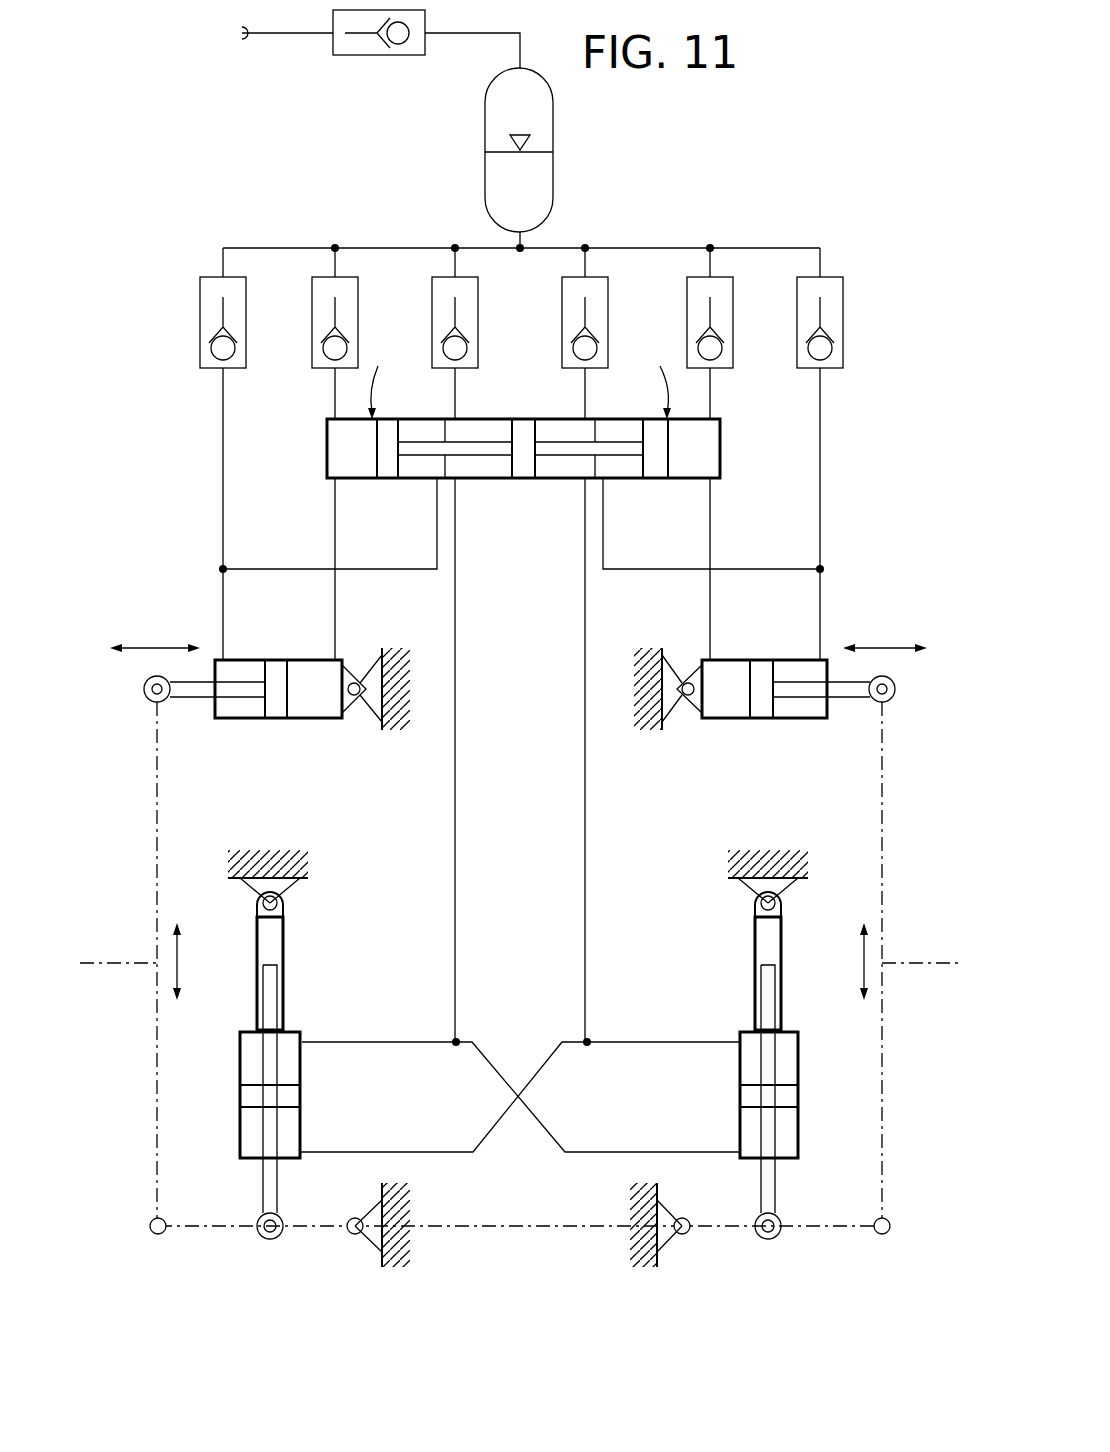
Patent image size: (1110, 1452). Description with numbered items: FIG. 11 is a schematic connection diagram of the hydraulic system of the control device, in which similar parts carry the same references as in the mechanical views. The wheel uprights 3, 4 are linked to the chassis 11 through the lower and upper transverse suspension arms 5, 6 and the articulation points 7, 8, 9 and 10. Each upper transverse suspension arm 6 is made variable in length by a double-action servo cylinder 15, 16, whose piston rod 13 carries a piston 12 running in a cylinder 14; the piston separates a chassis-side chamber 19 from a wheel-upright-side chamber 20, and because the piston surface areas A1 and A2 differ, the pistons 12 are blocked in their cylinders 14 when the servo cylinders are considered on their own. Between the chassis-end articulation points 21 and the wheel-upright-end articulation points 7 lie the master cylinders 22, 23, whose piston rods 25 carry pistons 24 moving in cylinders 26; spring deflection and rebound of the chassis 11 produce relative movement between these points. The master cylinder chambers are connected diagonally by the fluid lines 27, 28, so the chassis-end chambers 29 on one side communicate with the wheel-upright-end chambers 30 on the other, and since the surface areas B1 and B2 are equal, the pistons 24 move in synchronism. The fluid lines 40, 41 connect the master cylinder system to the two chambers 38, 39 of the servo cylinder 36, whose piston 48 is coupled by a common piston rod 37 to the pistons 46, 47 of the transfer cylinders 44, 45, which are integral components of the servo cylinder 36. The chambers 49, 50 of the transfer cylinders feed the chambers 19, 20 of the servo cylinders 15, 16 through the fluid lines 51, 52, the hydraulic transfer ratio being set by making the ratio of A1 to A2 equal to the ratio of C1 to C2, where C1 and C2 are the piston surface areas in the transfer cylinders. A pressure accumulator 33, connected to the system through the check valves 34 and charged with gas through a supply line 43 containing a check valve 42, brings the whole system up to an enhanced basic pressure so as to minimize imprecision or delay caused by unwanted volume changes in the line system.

The wheel upright 3 is at (158, 860).
The wheel upright 4 is at (882, 860).
The lower transverse suspension arm 5 is at (202, 1230).
The upper transverse suspension arm 6 is at (197, 700).
The wheel-upright-end articulation point 7 is at (158, 1235).
The articulation point 8 is at (352, 1235).
The articulation point 9 is at (147, 684).
The chassis-end articulation point 10 is at (357, 700).
The chassis 11 is at (396, 665).
The piston 12 is at (278, 720).
The piston rod 13 is at (168, 703).
The cylinder 14 is at (222, 720).
The servo cylinder 15 is at (214, 652).
The servo cylinder 16 is at (828, 652).
The chassis-side chamber 19 is at (316, 670).
The wheel-upright-side chamber 20 is at (240, 670).
The chassis-end articulation point 21 is at (285, 902).
The master cylinder 22 is at (285, 994).
The master cylinder 23 is at (760, 994).
The piston 24 is at (292, 1098).
The piston rod 25 is at (265, 1190).
The cylinder 26 is at (240, 1080).
The fluid line 27 is at (645, 1040).
The fluid line 28 is at (380, 1040).
The chassis-end chamber 29 is at (248, 1052).
The wheel-upright-end chamber 30 is at (248, 1140).
The pressure accumulator 33 is at (540, 116).
The check valve 34 is at (312, 291).
The servo cylinder 36 is at (513, 412).
The common piston rod 37 is at (493, 460).
The chamber 38 is at (468, 432).
The chamber 39 is at (563, 432).
The fluid line 40 is at (457, 812).
The fluid line 41 is at (586, 822).
The check valve 42 is at (375, 55).
The supply line 43 is at (299, 36).
The transfer cylinder 44 is at (387, 376).
The transfer cylinder 45 is at (654, 376).
The piston 46 is at (385, 470).
The piston 47 is at (660, 470).
The piston 48 is at (522, 462).
The chamber 49 is at (338, 432).
The chamber 50 is at (414, 430).
The fluid line 51 is at (336, 596).
The fluid line 52 is at (297, 568).
The piston surface area A1 is at (302, 712).
The piston surface area A2 is at (262, 712).
The piston surface area B1 is at (290, 1088).
The piston surface area B2 is at (290, 1112).
The piston surface area C1 is at (370, 460).
The piston surface area C2 is at (405, 465).